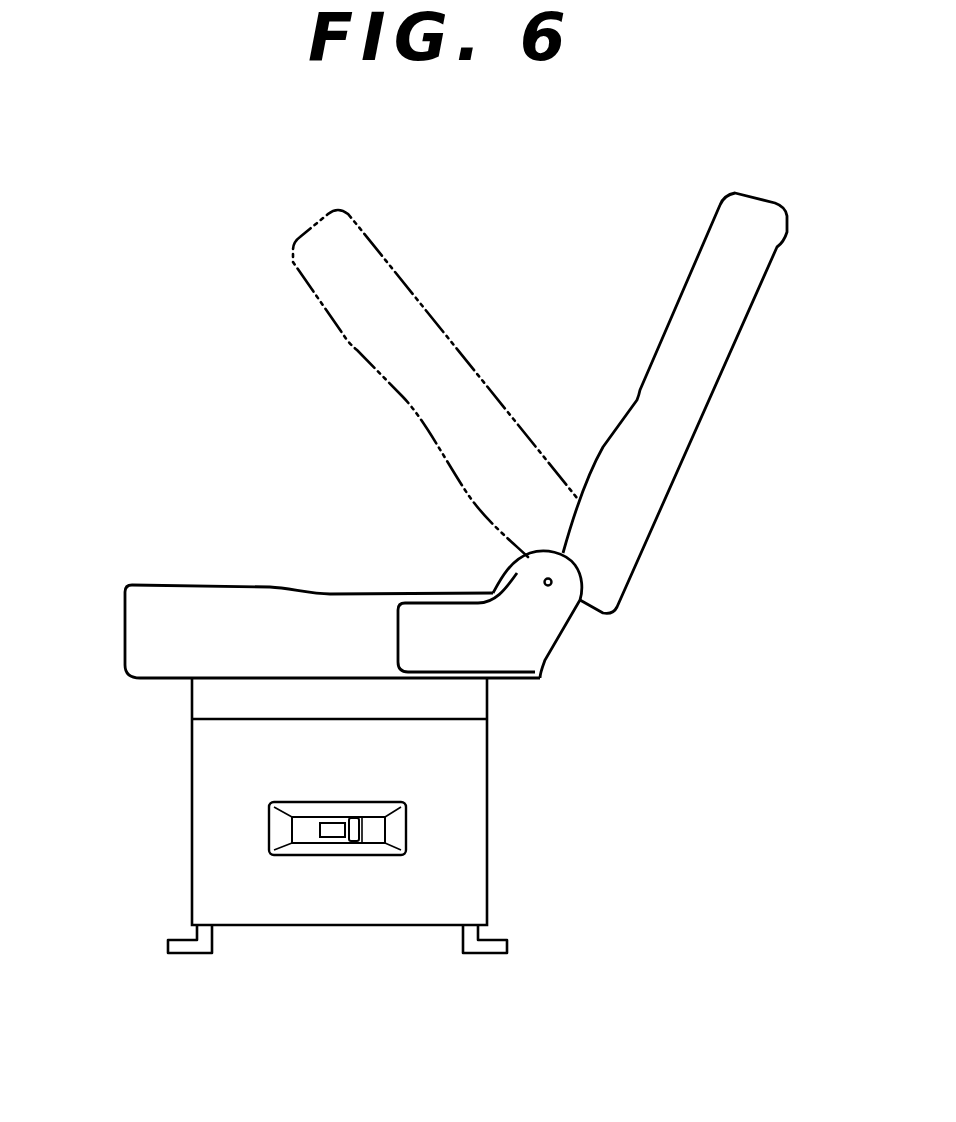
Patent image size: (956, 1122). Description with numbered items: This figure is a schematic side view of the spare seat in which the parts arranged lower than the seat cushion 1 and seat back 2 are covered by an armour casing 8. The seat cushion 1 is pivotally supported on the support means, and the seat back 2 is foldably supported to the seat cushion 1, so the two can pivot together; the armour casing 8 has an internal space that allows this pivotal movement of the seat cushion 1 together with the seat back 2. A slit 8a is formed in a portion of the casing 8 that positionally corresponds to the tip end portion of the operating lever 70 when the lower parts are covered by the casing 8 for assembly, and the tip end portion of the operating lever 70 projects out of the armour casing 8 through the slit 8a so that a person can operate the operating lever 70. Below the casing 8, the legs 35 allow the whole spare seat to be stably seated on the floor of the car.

The seat cushion 1 is at (292, 588).
The seat back 2 is at (665, 317).
The armour casing 8 is at (212, 782).
The slit 8a is at (333, 836).
The legs 35 is at (183, 953).
The operating lever 70 is at (358, 818).